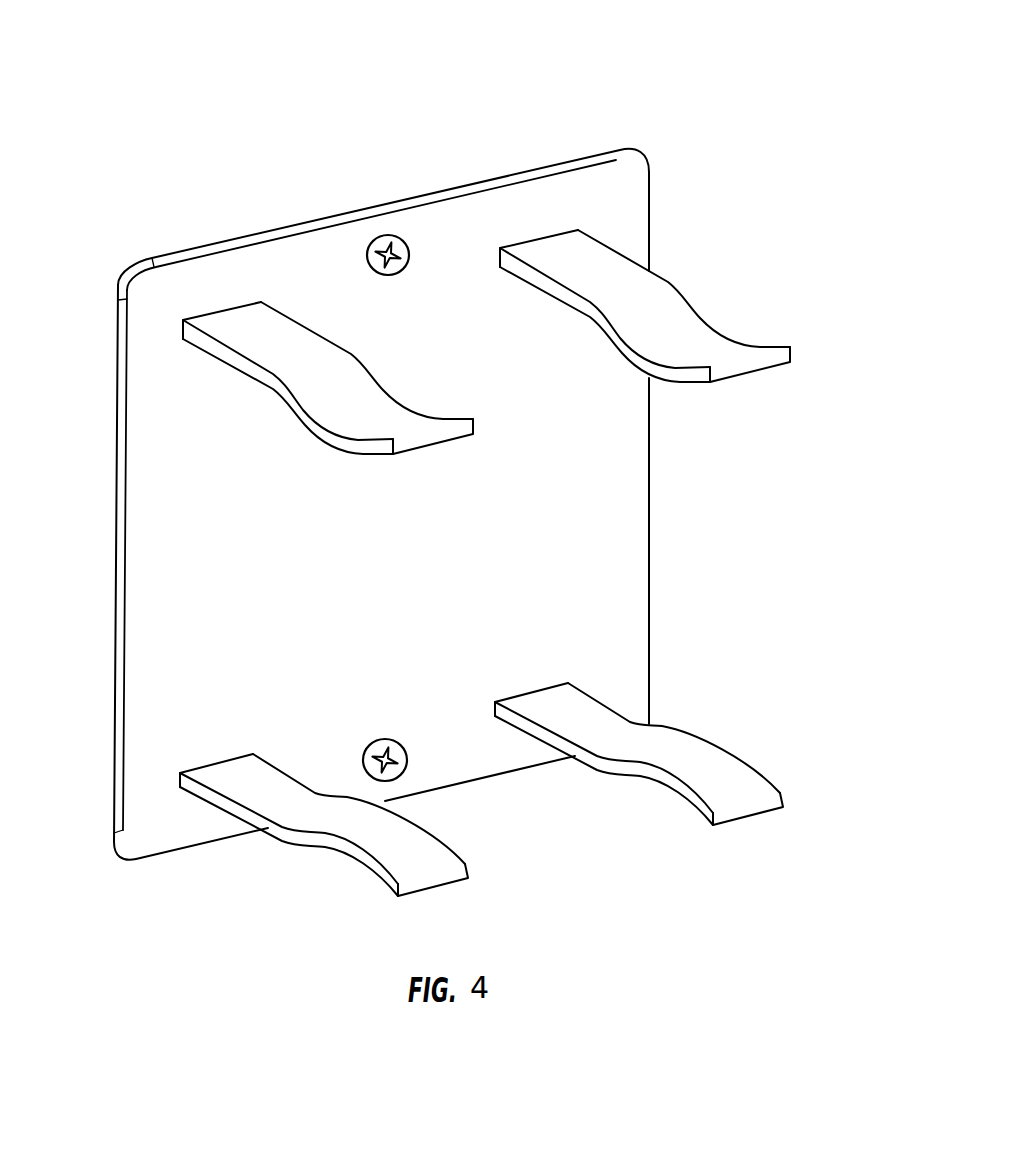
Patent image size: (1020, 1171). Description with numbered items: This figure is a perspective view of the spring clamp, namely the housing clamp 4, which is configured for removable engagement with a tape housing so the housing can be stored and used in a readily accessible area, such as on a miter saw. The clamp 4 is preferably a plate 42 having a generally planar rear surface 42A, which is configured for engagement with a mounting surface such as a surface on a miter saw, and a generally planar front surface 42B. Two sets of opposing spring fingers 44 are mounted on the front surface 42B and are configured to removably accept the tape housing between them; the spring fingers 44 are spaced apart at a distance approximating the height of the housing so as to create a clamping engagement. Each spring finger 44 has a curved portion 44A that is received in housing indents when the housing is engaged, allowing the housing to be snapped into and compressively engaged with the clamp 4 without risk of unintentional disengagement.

The housing clamp 4 is at (682, 78).
The plate 42 is at (564, 166).
The rear surface 42A is at (163, 507).
The front surface 42B is at (627, 523).
The spring fingers 44 is at (253, 320).
The curved portion 44A is at (705, 334).